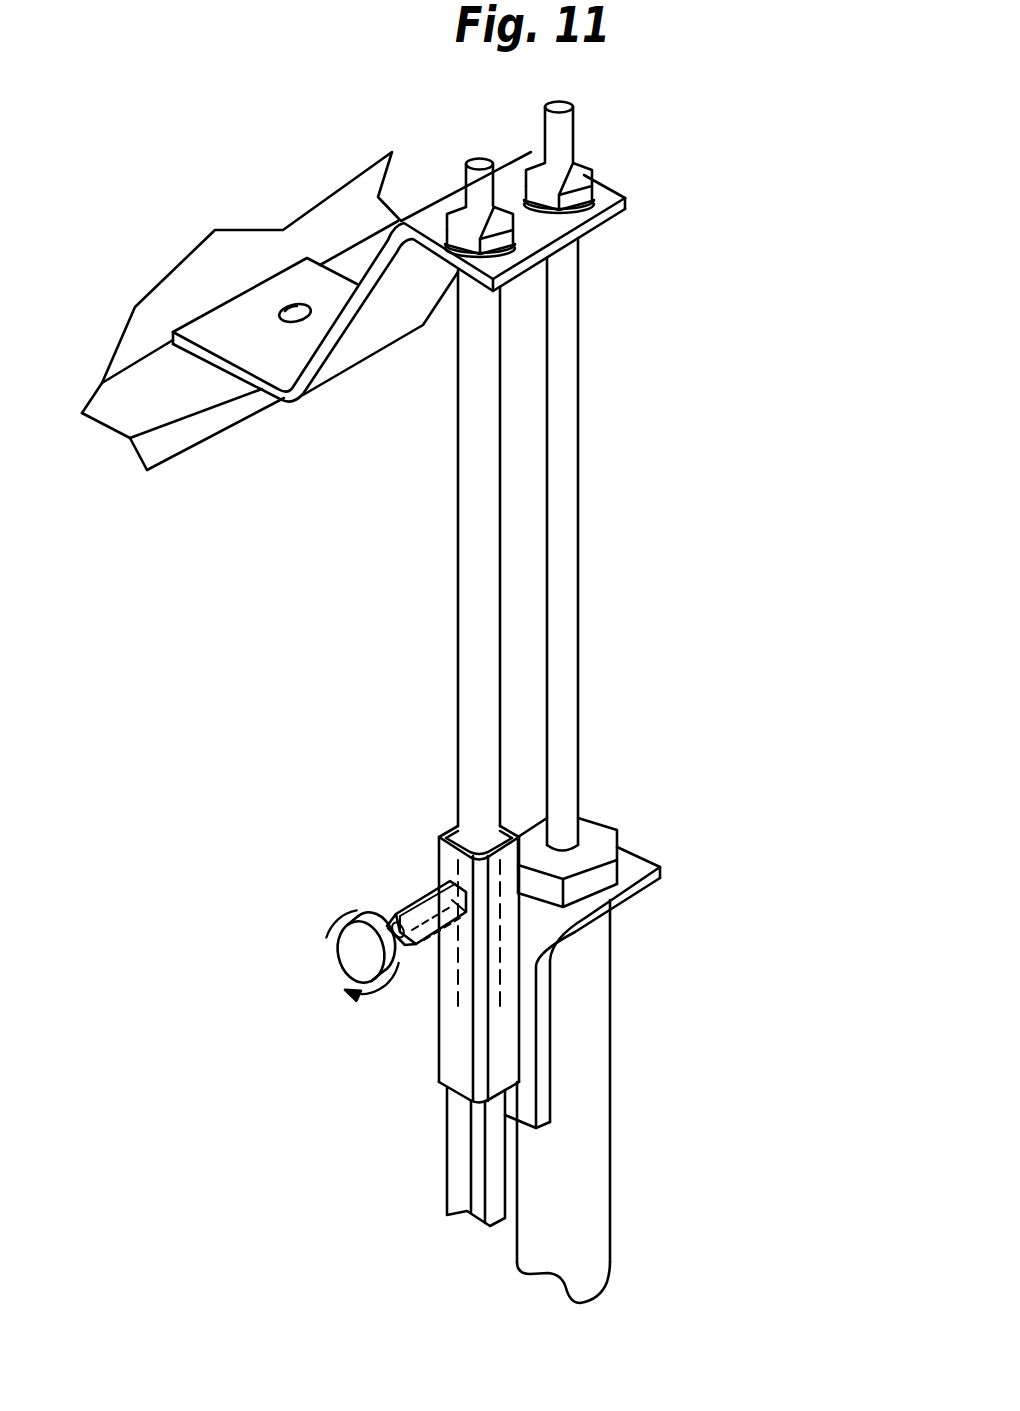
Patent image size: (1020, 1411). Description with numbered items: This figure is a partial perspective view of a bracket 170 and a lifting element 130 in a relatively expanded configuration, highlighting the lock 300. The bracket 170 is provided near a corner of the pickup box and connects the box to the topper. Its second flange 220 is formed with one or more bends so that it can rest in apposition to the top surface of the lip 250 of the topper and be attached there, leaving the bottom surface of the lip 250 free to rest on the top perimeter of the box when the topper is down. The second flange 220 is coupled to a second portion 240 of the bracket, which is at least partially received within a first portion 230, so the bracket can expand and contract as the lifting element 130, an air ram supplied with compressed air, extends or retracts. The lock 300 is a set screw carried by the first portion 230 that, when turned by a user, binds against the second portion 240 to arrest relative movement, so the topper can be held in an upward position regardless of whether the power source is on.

The first lifting element 130 is at (608, 1108).
The first bracket 170 is at (455, 1042).
The second flange 220 is at (253, 308).
The first portion 230 is at (447, 1150).
The second portion 240 is at (470, 712).
The lip 250 is at (153, 423).
The lock 300 is at (430, 895).